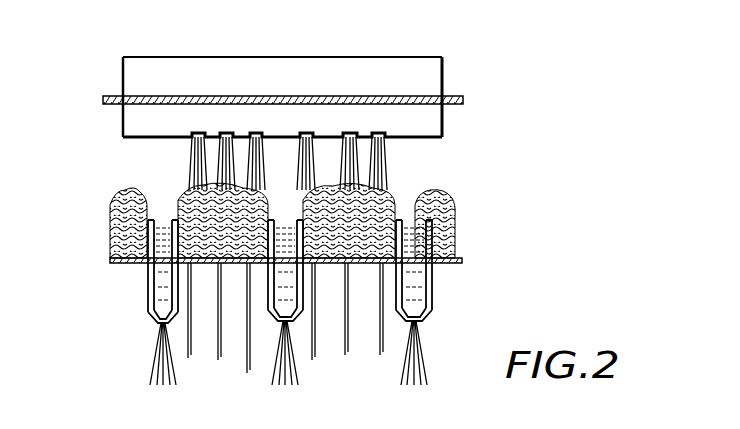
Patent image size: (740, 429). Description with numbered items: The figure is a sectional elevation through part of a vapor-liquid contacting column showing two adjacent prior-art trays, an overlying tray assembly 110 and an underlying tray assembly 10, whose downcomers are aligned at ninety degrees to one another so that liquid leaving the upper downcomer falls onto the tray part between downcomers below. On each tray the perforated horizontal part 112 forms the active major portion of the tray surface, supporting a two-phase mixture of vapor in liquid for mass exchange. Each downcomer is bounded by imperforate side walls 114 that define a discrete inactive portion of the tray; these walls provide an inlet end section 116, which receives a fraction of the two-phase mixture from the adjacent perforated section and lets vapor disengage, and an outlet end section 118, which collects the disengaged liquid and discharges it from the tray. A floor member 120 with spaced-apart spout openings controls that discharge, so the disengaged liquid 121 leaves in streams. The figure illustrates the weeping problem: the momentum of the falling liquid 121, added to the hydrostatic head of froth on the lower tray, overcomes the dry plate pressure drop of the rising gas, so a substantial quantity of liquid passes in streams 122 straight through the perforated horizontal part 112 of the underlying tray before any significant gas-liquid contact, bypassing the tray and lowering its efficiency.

The spray head assembly 110 is at (196, 48).
The inlet end section 116 is at (397, 56).
The perforated horizontal part 112 is at (397, 97).
The imperforate side walls 114 is at (133, 120).
The outlet end section 118 is at (443, 129).
The floor member 120 is at (387, 142).
The disengaged liquid 121 is at (183, 158).
The nozzle tube 10 is at (137, 299).
The streams 122 is at (377, 353).